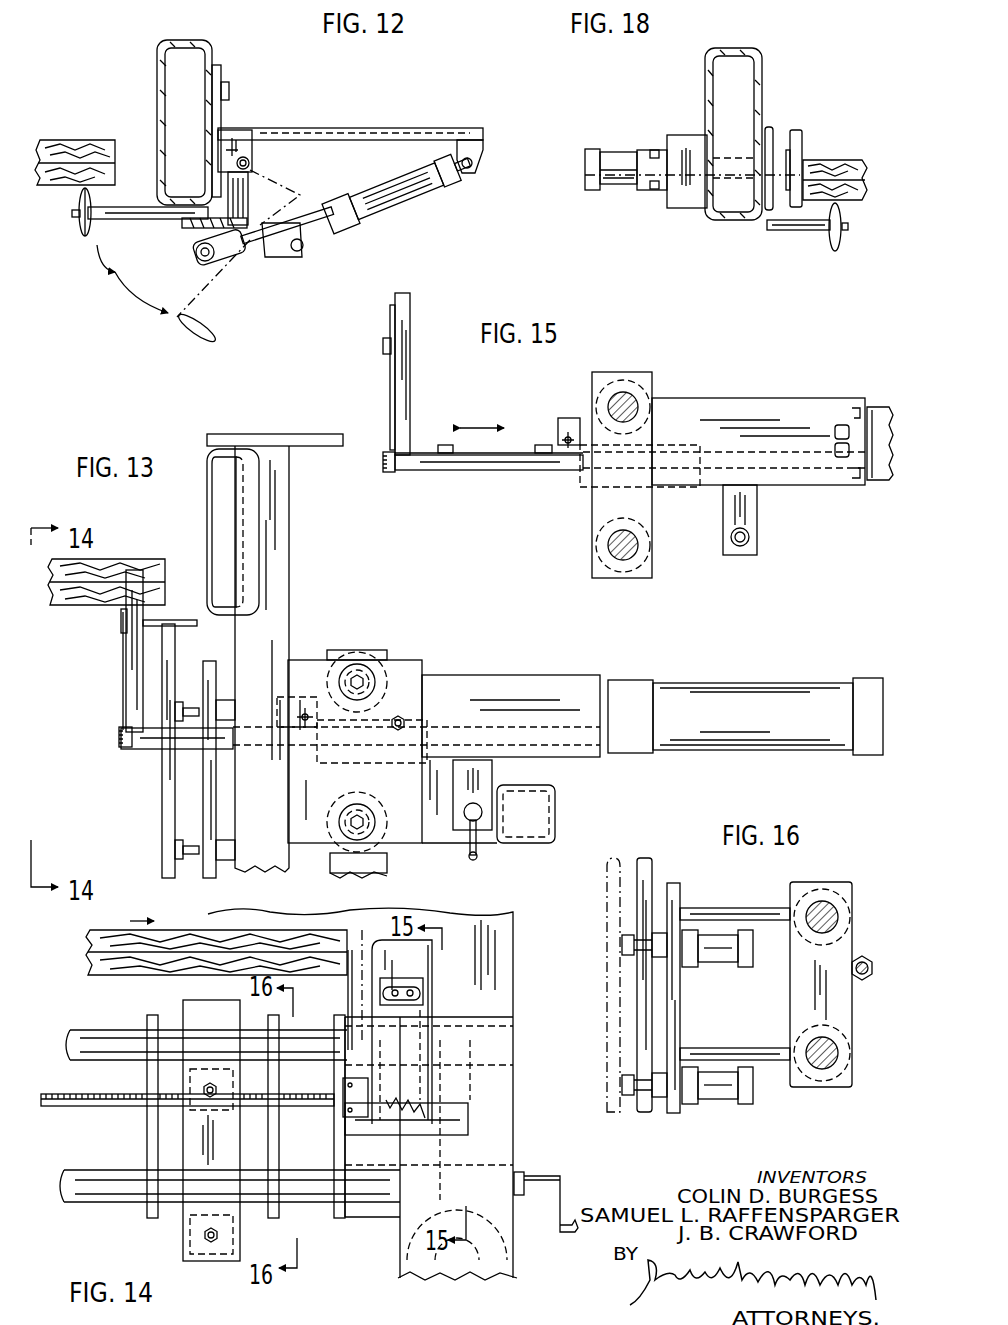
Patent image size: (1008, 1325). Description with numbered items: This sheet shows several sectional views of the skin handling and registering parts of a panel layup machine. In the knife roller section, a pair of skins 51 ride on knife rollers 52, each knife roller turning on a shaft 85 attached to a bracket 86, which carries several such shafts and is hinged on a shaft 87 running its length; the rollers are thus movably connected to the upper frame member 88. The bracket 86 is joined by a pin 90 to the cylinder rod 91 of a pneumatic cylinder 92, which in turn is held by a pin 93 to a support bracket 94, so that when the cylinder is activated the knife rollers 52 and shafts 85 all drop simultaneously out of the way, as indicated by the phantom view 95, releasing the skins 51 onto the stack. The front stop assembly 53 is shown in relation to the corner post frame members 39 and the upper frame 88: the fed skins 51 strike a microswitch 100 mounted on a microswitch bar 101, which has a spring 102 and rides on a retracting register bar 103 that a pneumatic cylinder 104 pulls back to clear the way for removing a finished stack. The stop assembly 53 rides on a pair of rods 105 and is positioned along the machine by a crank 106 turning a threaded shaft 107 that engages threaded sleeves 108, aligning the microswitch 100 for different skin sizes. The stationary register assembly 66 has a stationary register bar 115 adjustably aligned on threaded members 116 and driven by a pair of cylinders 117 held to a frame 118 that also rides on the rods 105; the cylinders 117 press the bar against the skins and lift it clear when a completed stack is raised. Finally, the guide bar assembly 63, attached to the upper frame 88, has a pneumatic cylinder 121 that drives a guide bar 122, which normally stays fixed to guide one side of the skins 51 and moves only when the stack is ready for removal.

In FIG. 13, the framework 39 is at (282, 562).
In FIG. 12, the skins 51 is at (88, 140).
In FIG. 18, the skins 51 is at (836, 160).
In FIG. 13, the skins 51 is at (118, 560).
In FIG. 14, the skins 51 is at (92, 975).
In FIG. 12, the knife rollers 52 is at (77, 224).
In FIG. 18, the knife rollers 52 is at (842, 240).
In FIG. 13, the knife rollers 52 is at (125, 656).
In FIG. 15, the stop assembly 53 is at (733, 382).
In FIG. 13, the stop assembly 53 is at (344, 604).
In FIG. 14, the stop assembly 53 is at (528, 940).
In FIG. 18, the guide bar assembly 63 is at (683, 97).
In FIG. 16, the stationary register assembly 66 is at (829, 880).
In FIG. 12, the shaft 85 is at (110, 219).
In FIG. 18, the shaft 85 is at (800, 231).
In FIG. 12, the bracket 86 is at (198, 228).
In FIG. 12, the shaft 87 is at (252, 160).
In FIG. 12, the upper frame member 88 is at (185, 40).
In FIG. 18, the upper frame member 88 is at (735, 48).
In FIG. 13, the upper frame member 88 is at (207, 508).
In FIG. 12, the pin 90 is at (205, 262).
In FIG. 12, the cylinder rod 91 is at (258, 243).
In FIG. 12, the pneumatic cylinder 92 is at (396, 204).
In FIG. 12, the pin 93 is at (472, 161).
In FIG. 12, the support bracket 94 is at (462, 128).
In FIG. 12, the phantom view 95 is at (236, 293).
In FIG. 15, the microswitch 100 is at (384, 340).
In FIG. 13, the microswitch 100 is at (121, 622).
In FIG. 14, the microswitch 100 is at (380, 992).
In FIG. 15, the microswitch bar 101 is at (410, 388).
In FIG. 13, the microswitch bar 101 is at (126, 687).
In FIG. 14, the microswitch bar 101 is at (430, 1010).
In FIG. 15, the spring 102 is at (387, 474).
In FIG. 13, the spring 102 is at (118, 741).
In FIG. 14, the spring 102 is at (420, 1108).
In FIG. 15, the retracting register bar 103 is at (466, 470).
In FIG. 13, the retracting register bar 103 is at (158, 750).
In FIG. 15, the pneumatic cylinder 104 is at (884, 481).
In FIG. 13, the pneumatic cylinder 104 is at (765, 690).
In FIG. 15, the rods 105 is at (621, 395).
In FIG. 13, the rods 105 is at (366, 670).
In FIG. 16, the rods 105 is at (831, 910).
In FIG. 14, the rods 105 is at (115, 1040).
In FIG. 13, the crank 106 is at (481, 857).
In FIG. 14, the crank 106 is at (545, 1176).
In FIG. 16, the threaded shaft 107 is at (865, 981).
In FIG. 14, the threaded shaft 107 is at (103, 1107).
In FIG. 13, the threaded sleeves 108 is at (345, 652).
In FIG. 14, the threaded sleeves 108 is at (168, 1022).
In FIG. 13, the stationary register bar 115 is at (165, 816).
In FIG. 16, the stationary register bar 115 is at (650, 868).
In FIG. 14, the stationary register bar 115 is at (190, 1213).
In FIG. 13, the threaded members 116 is at (192, 861).
In FIG. 16, the threaded members 116 is at (662, 1100).
In FIG. 13, the cylinders 117 is at (226, 698).
In FIG. 16, the cylinders 117 is at (720, 956).
In FIG. 13, the frame 118 is at (210, 790).
In FIG. 16, the frame 118 is at (678, 1006).
In FIG. 18, the pneumatic cylinder 121 is at (619, 150).
In FIG. 18, the guide bar 122 is at (812, 118).